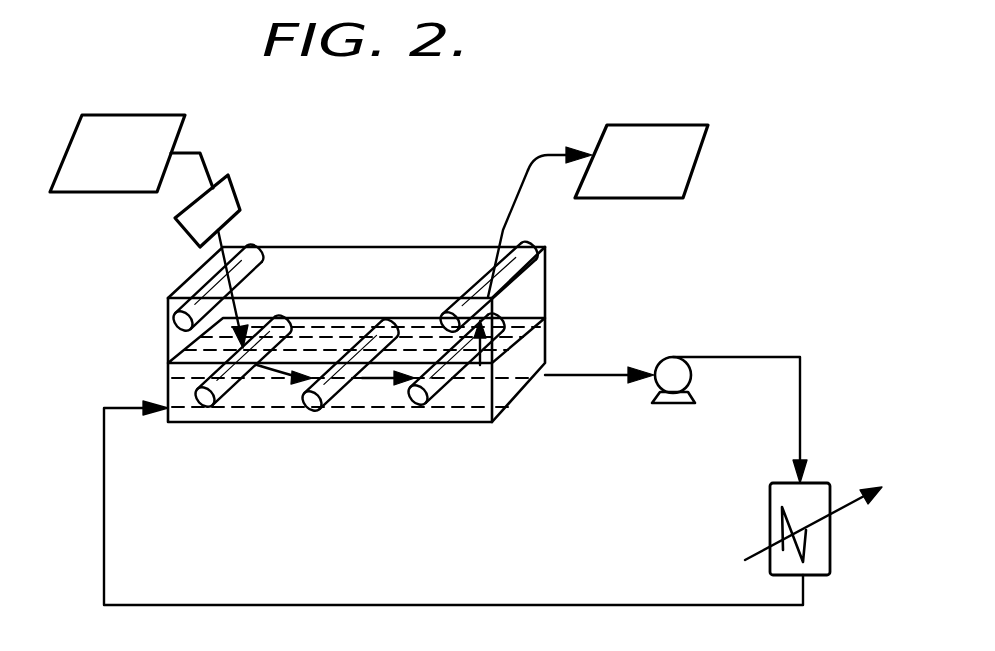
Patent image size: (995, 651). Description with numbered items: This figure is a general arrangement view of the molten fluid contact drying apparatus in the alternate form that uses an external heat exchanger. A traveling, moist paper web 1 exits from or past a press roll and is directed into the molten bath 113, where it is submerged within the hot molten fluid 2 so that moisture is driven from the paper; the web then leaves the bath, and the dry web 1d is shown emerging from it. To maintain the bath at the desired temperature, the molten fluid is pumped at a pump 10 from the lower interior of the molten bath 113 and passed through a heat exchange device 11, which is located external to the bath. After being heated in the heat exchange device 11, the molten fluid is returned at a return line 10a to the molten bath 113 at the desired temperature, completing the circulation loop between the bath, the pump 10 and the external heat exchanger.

The traveling moist paper web 1 is at (95, 132).
The dry web 1d is at (658, 138).
The molten bath 113 is at (145, 340).
The molten fluid 2 is at (258, 392).
The pump 10 is at (675, 368).
The return 10a is at (104, 532).
The heat exchange device 11 is at (770, 503).